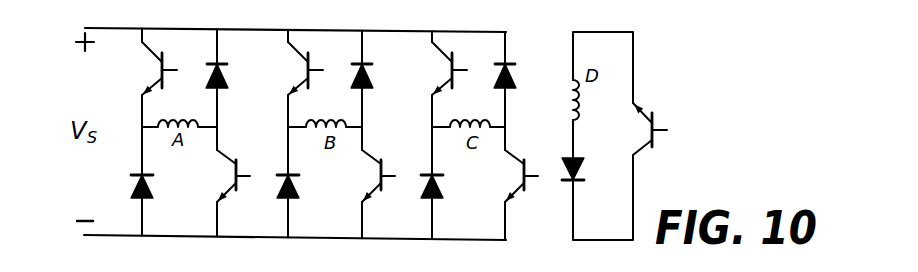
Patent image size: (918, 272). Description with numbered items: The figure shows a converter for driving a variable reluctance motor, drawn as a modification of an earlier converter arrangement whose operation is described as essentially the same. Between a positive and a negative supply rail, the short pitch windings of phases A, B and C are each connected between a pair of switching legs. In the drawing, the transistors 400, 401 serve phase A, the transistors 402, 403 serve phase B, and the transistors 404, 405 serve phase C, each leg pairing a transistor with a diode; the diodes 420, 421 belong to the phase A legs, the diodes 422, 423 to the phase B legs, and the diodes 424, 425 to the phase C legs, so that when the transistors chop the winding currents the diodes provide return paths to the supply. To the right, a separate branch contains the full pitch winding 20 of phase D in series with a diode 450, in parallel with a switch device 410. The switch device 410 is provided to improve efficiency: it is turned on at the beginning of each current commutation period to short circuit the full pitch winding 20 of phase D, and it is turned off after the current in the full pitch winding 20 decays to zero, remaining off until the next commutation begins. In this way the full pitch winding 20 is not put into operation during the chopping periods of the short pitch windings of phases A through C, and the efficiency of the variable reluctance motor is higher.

The transistor 400 is at (152, 86).
The transistor 401 is at (226, 193).
The transistor 402 is at (297, 90).
The transistor 403 is at (372, 194).
The transistor 404 is at (443, 90).
The transistor 405 is at (516, 194).
The diode 420 is at (131, 193).
The diode 421 is at (223, 91).
The diode 422 is at (287, 198).
The diode 423 is at (366, 90).
The diode 424 is at (429, 198).
The diode 425 is at (511, 91).
The full pitch winding 20 is at (585, 108).
The diode 450 is at (596, 156).
The switch device 410 is at (655, 146).